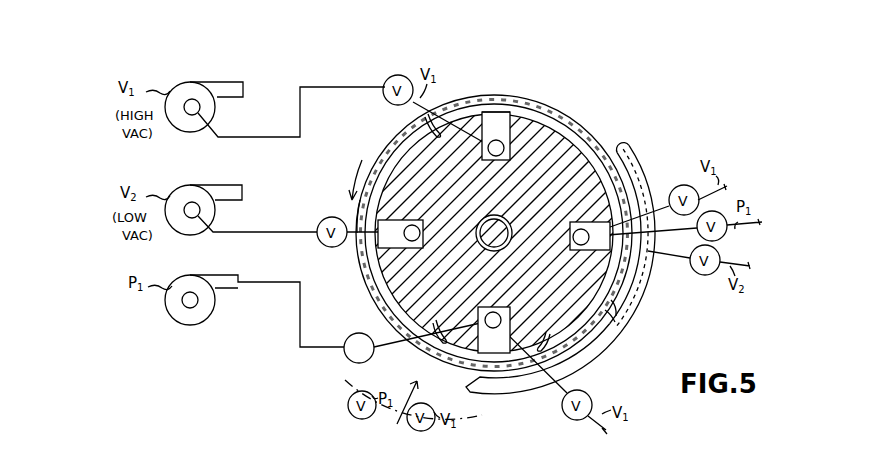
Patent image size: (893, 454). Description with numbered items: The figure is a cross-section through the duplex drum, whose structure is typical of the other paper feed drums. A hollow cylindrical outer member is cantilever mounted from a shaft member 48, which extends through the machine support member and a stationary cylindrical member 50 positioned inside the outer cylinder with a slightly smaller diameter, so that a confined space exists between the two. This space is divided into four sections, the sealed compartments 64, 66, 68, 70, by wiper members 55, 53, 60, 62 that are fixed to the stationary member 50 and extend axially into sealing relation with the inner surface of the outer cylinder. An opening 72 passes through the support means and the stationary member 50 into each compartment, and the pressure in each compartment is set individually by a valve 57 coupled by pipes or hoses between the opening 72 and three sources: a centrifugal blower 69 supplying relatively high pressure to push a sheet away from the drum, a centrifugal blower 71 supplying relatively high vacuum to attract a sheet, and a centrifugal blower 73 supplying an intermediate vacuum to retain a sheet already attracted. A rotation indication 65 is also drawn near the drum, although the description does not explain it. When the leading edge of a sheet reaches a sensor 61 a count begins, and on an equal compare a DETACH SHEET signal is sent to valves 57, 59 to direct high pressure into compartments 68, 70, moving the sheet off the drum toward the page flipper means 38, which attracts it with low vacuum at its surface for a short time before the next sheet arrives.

The page flipper means 38 is at (633, 160).
The shaft member 48 is at (506, 250).
The stationary cylindrical member 50 is at (591, 150).
The wiper member 53 is at (404, 136).
The wiper member 55 is at (562, 122).
The valve 57 is at (347, 360).
The valve 59 is at (729, 230).
The wiper member 60 is at (437, 324).
The sensor 61 is at (648, 295).
The wiper member 62 is at (598, 350).
The sealed compartment 64 is at (497, 104).
The rotation arrow 65 is at (413, 413).
The sealed compartment 66 is at (364, 286).
The sealed compartment 68 is at (483, 371).
The centrifugal blower 69 is at (201, 275).
The sealed compartment 70 is at (630, 311).
The centrifugal blower 71 is at (204, 81).
The opening 72 is at (500, 142).
The centrifugal blower 73 is at (205, 185).